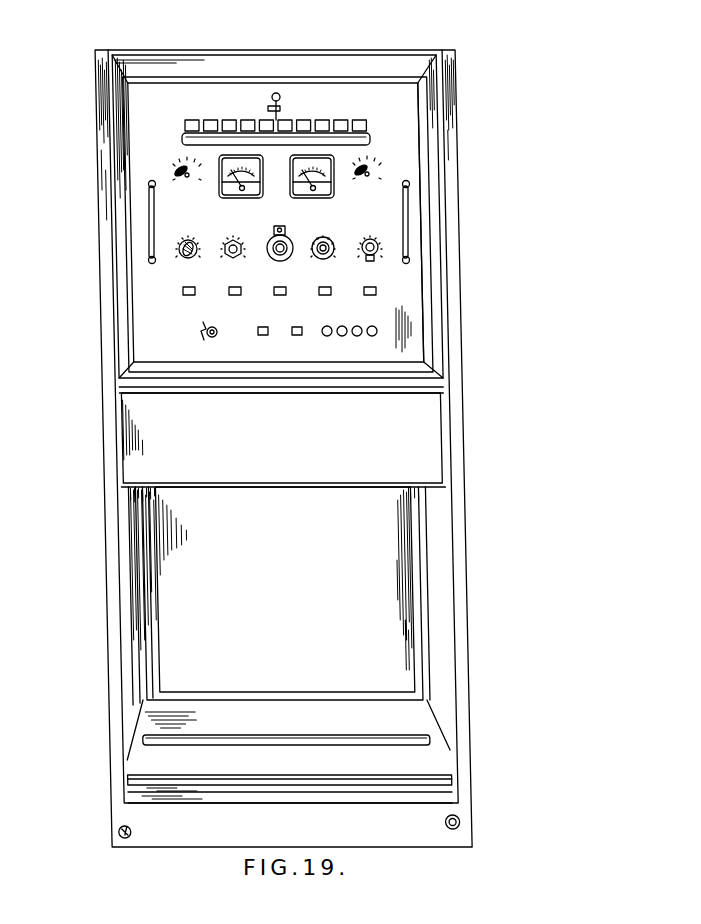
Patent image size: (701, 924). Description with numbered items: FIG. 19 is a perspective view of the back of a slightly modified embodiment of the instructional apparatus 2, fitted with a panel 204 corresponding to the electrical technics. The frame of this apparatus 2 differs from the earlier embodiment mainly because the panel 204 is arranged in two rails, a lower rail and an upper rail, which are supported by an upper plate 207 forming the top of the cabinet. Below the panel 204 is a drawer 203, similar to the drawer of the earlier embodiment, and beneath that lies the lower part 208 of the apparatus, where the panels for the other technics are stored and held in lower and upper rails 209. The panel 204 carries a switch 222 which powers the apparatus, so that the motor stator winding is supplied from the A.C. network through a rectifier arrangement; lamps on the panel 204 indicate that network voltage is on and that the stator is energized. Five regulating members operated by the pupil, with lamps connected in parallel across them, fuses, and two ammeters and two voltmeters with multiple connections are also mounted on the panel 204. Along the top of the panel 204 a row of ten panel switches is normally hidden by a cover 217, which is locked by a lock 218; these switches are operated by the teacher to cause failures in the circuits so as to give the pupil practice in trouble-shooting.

The cabinet frame 2 is at (106, 393).
The drawer 203 is at (428, 433).
The panel 204 is at (415, 73).
The upper plate 207 is at (330, 39).
The lower part 208 is at (397, 588).
The lower and upper rails 209 is at (440, 775).
The cover 217 is at (375, 131).
The lock 218 is at (278, 92).
The switch 222 is at (216, 335).